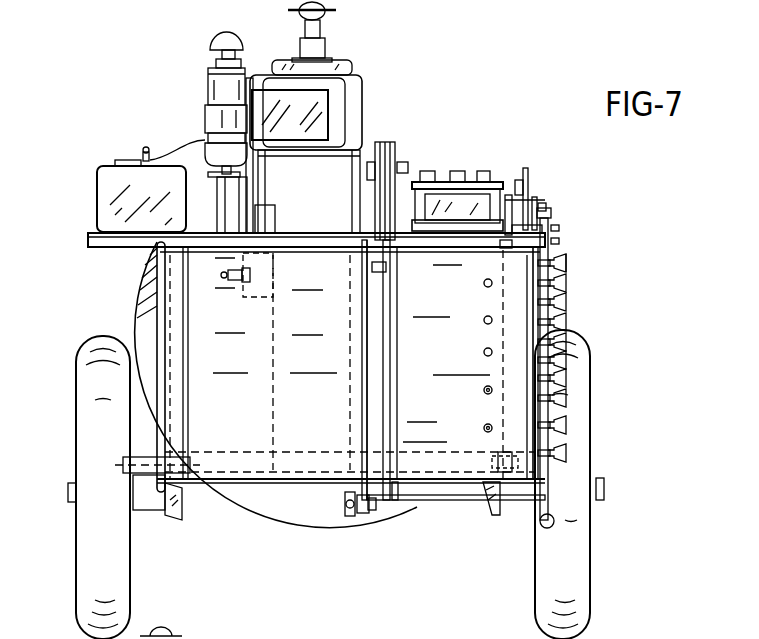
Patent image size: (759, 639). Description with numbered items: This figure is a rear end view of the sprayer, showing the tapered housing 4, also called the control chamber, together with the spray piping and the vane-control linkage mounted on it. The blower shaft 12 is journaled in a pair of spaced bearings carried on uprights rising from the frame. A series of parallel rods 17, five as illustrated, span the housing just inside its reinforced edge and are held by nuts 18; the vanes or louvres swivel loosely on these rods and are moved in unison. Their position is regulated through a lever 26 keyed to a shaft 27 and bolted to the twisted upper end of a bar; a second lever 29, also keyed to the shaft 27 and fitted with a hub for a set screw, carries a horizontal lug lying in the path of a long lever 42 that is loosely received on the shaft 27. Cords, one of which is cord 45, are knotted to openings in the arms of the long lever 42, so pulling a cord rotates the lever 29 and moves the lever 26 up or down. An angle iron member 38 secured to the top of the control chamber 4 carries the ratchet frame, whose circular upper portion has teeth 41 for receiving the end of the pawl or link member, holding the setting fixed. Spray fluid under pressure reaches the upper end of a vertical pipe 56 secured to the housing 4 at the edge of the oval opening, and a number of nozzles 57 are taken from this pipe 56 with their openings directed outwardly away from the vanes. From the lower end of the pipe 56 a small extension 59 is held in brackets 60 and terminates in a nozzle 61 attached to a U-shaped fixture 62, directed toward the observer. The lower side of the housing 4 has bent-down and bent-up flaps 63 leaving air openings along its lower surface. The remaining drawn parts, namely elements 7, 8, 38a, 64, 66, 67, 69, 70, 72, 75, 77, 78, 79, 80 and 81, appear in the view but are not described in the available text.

The tapered housing 4 is at (454, 366).
The wheel hub 7 is at (67, 490).
The wheel 8 is at (128, 572).
The blower shaft 12 is at (473, 197).
The parallel rods 17 is at (483, 400).
The nuts 18 is at (486, 390).
The lever 26 is at (559, 243).
The shaft 27 is at (559, 228).
The second lever 29 is at (543, 210).
The angle iron member 38 is at (500, 249).
The bracket arm 38a is at (540, 253).
The teeth 41 is at (535, 197).
The long lever 42 is at (519, 185).
The cord 45 is at (525, 180).
The vertical pipe 56 is at (552, 222).
The nozzles 57 is at (575, 322).
The small extension 59 is at (452, 505).
The brackets 60 is at (390, 492).
The nozzle 61 is at (352, 514).
The U-shaped fixture 62 is at (350, 512).
The flaps 63 is at (410, 493).
The nozzle cap 64 is at (568, 262).
The bearing 66 is at (130, 455).
The axle 67 is at (125, 472).
The partition 69 is at (252, 337).
The compartment 70 is at (278, 290).
The post 72 is at (232, 288).
The disc 75 is at (140, 290).
The drain 77 is at (370, 487).
The support 78 is at (262, 233).
The tank 79 is at (333, 123).
The plate 80 is at (400, 147).
The channel 81 is at (384, 268).